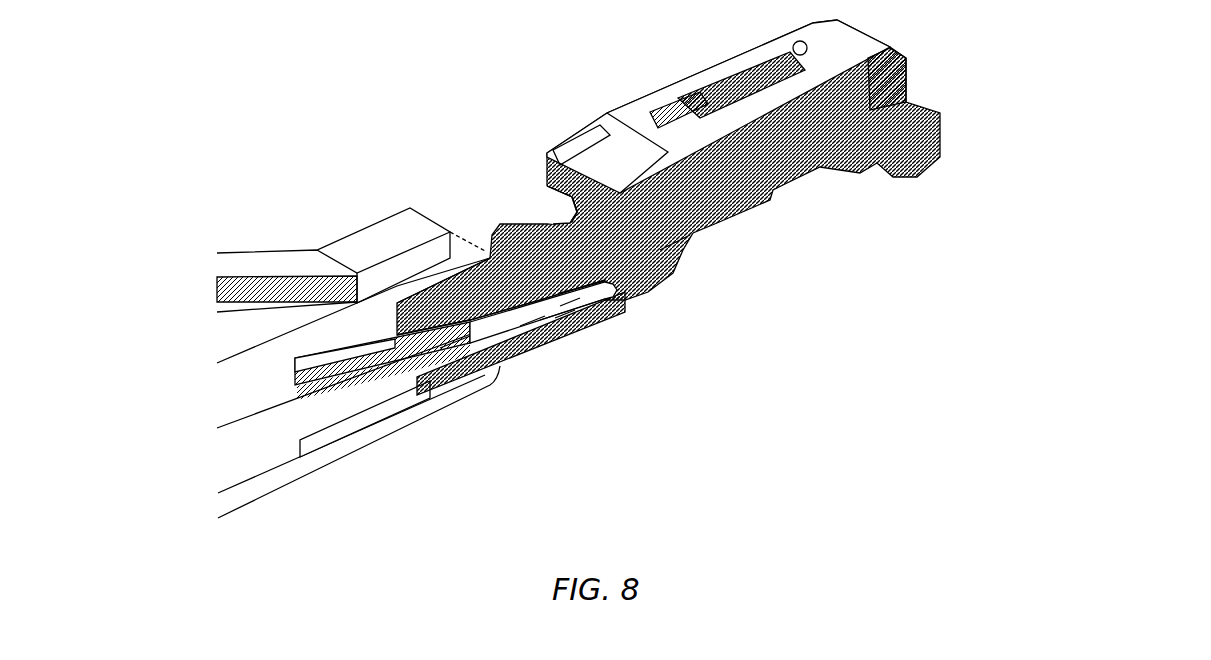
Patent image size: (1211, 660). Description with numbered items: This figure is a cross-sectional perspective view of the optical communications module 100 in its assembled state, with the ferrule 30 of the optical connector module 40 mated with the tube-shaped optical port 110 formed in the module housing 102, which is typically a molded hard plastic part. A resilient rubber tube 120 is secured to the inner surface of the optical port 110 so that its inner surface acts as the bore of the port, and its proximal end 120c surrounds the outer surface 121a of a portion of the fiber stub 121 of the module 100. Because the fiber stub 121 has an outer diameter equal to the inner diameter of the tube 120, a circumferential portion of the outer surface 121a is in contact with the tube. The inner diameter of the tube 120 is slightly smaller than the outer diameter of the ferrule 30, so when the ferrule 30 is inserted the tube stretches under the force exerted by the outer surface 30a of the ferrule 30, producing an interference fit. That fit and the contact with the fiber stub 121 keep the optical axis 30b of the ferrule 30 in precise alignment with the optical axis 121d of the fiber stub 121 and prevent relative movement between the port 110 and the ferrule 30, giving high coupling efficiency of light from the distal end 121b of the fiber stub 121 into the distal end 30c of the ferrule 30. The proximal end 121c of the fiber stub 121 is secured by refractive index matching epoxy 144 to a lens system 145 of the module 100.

The optical communications module 100 is at (452, 102).
The module housing 102 is at (913, 147).
The optical port 110 is at (562, 316).
The tube 120 is at (500, 357).
The proximal end of the tube 120c is at (570, 300).
The fiber stub 121 is at (582, 308).
The outer surface of the fiber stub 121a is at (567, 217).
The distal end of the fiber stub 121b is at (540, 260).
The proximal end of the fiber stub 121c is at (596, 233).
The optical axis of the fiber stub 121d is at (600, 292).
The refractive index matching epoxy 144 is at (622, 276).
The lens system 145 is at (673, 273).
The ferrule 30 is at (395, 382).
The outer surface of the ferrule 30a is at (350, 408).
The optical axis of the ferrule 30b is at (457, 340).
The distal end of the ferrule 30c is at (533, 320).
The optical connector module 40 is at (402, 232).